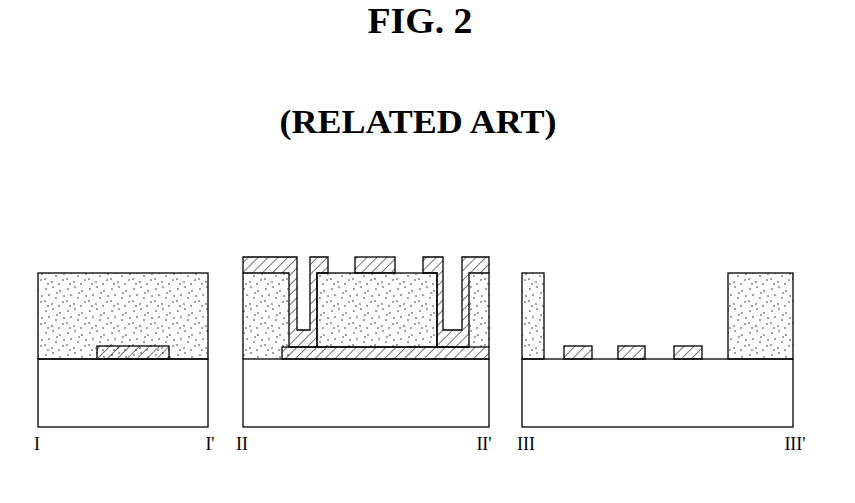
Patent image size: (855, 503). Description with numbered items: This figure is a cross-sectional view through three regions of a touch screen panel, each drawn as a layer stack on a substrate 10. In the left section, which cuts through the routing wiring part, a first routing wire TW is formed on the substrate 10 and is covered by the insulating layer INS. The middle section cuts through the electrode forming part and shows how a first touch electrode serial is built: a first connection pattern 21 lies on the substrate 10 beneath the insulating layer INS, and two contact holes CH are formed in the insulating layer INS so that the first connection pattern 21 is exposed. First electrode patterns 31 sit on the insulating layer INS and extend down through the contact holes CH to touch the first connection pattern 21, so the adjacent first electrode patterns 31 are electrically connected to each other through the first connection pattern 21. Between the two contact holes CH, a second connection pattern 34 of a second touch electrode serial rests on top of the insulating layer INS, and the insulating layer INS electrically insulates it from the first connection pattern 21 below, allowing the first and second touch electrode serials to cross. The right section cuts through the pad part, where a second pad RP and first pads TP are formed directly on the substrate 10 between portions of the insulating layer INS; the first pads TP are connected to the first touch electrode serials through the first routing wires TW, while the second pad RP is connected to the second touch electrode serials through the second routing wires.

The substrate 10 is at (128, 418).
The insulating layer INS is at (70, 278).
The first routing wire TW is at (126, 346).
The first connection pattern 21 is at (403, 353).
The first electrode pattern 31 is at (262, 257).
The contact hole CH is at (305, 261).
The second connection pattern 34 is at (380, 257).
The second pad RP is at (575, 346).
The first pad TP is at (631, 346).